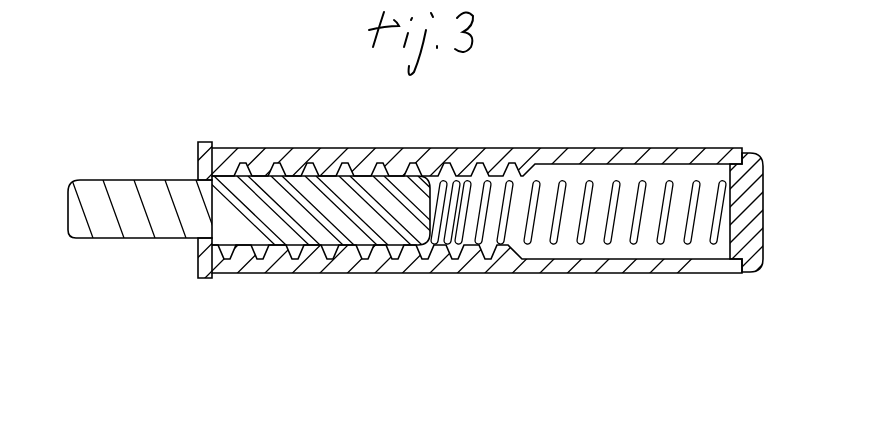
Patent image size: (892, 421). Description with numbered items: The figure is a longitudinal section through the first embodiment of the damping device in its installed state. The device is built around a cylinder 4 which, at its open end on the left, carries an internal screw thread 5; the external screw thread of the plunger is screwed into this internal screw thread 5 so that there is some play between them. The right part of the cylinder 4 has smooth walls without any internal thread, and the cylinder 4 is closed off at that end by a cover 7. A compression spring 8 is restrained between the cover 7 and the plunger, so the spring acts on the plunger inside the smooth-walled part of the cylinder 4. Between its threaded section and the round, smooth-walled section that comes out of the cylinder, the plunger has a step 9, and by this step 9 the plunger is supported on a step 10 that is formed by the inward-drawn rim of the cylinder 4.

The cylinder 4 is at (530, 162).
The internal screw thread 5 is at (300, 168).
The cover 7 is at (748, 202).
The compression spring 8 is at (560, 222).
The step 9 is at (222, 225).
The step 10 is at (175, 180).